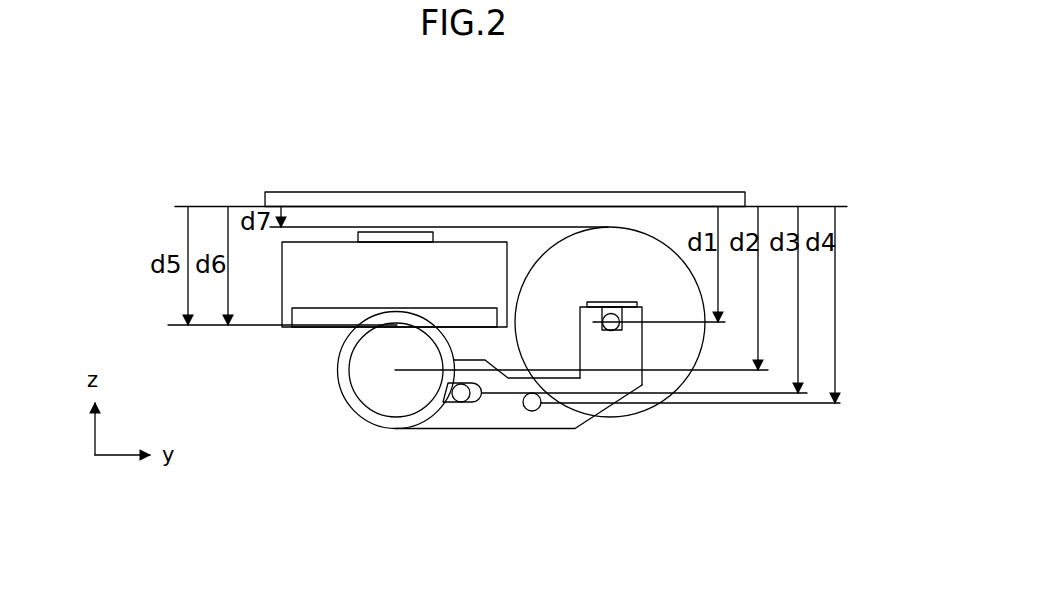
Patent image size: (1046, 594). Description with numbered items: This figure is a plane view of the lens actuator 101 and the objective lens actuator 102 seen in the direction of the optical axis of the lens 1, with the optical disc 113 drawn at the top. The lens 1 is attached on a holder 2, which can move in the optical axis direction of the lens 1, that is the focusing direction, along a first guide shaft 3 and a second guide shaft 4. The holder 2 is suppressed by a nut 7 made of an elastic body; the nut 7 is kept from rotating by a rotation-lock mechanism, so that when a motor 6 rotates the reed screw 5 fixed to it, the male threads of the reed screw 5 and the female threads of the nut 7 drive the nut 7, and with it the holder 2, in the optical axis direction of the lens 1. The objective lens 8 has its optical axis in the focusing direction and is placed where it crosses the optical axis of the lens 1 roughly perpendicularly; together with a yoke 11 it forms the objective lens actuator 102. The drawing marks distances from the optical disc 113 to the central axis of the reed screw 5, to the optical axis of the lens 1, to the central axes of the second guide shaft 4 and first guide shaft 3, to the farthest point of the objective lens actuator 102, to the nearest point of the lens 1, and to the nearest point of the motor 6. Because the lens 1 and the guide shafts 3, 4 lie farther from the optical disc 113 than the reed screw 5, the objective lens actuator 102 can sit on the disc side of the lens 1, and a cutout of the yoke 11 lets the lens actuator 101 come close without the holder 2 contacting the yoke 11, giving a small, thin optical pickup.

The lens 1 is at (373, 379).
The holder 2 is at (435, 417).
The first guide shaft 3 is at (532, 411).
The second guide shaft 4 is at (461, 402).
The reed screw 5 is at (611, 331).
The motor 6 is at (630, 247).
The nut 7 is at (608, 307).
The objective lens 8 is at (380, 235).
The yoke 11 is at (317, 250).
The lens actuator 101 is at (692, 422).
The objective lens actuator 102 is at (298, 333).
The optical disc 113 is at (694, 197).